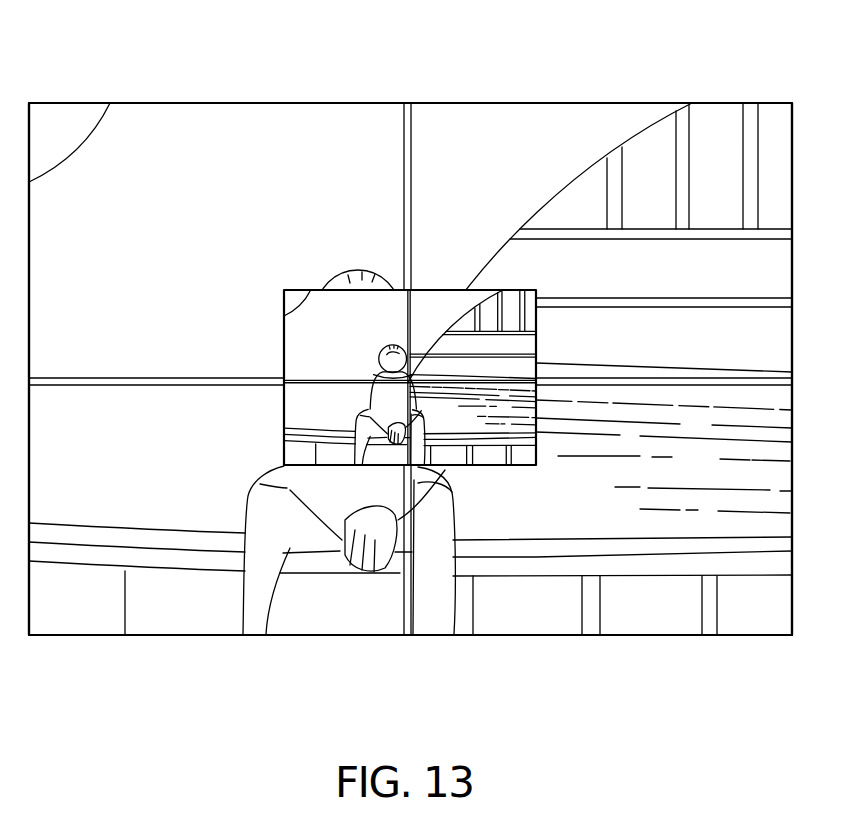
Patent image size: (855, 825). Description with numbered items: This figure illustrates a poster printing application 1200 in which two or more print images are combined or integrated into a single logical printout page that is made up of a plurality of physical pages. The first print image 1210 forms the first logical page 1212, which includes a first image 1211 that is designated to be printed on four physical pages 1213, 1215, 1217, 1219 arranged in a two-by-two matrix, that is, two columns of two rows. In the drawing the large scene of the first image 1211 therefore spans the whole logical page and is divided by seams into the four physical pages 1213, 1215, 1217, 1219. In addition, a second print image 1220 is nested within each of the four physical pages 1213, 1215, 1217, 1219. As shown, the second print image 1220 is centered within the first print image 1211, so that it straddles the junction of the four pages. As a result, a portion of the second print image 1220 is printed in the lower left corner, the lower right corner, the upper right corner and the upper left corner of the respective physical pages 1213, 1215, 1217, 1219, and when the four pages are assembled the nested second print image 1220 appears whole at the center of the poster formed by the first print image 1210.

The poster printing application 1200 is at (727, 72).
The first print image 1210 is at (175, 650).
The first image 1211 is at (335, 612).
The first logical page 1212 is at (645, 665).
The physical page 1213 is at (55, 638).
The physical page 1215 is at (758, 638).
The physical page 1217 is at (522, 100).
The physical page 1219 is at (93, 131).
The second print image 1220 is at (527, 470).